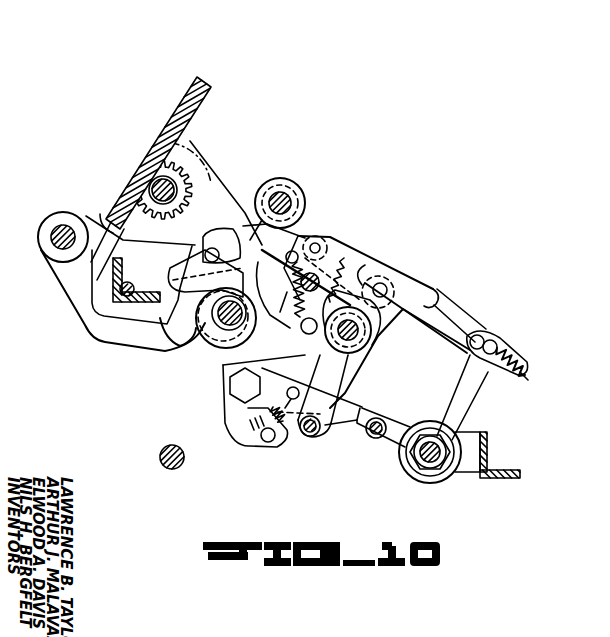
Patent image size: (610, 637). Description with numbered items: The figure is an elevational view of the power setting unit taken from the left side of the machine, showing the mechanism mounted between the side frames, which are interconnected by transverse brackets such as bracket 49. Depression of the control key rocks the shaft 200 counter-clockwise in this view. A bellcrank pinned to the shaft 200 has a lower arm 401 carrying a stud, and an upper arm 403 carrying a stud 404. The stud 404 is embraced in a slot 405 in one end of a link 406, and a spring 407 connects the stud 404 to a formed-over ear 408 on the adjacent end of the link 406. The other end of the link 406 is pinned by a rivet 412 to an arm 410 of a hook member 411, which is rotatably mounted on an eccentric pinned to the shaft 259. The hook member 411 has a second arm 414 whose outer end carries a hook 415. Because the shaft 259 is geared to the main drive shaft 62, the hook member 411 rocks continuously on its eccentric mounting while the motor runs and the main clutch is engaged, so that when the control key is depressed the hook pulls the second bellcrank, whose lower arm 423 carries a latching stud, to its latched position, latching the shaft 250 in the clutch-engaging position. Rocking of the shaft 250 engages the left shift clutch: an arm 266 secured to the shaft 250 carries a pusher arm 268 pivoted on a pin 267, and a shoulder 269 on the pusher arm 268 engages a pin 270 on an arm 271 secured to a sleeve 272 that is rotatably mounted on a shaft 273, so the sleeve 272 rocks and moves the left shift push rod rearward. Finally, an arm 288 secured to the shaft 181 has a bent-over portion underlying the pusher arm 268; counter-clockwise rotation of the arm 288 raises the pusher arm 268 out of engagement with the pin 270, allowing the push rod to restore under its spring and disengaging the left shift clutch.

The transverse bracket 49 is at (162, 148).
The main drive shaft 62 is at (183, 177).
The shaft 181 is at (64, 225).
The pin 270 is at (106, 228).
The arm 288 is at (100, 327).
The shoulder 269 is at (239, 226).
The shaft 259 is at (215, 360).
The pusher arm 268 is at (221, 364).
The hook member 411 is at (191, 340).
The arm 271 is at (244, 224).
The sleeve 272 is at (290, 185).
The shaft 273 is at (294, 204).
The arm 410 is at (288, 241).
The rivet 412 is at (322, 244).
The hook 415 is at (376, 270).
The pin 267 is at (386, 288).
The arm 266 is at (435, 290).
The link 406 is at (447, 315).
The slot 405 is at (478, 333).
The spring 407 is at (516, 352).
The formed-over ear 408 is at (521, 380).
The stud 404 is at (480, 359).
The upper arm 403 is at (470, 397).
The shaft 200 is at (419, 462).
The lower arm 401 is at (373, 442).
The lower arm 423 is at (345, 397).
The second arm 414 is at (285, 401).
The shaft 250 is at (356, 338).